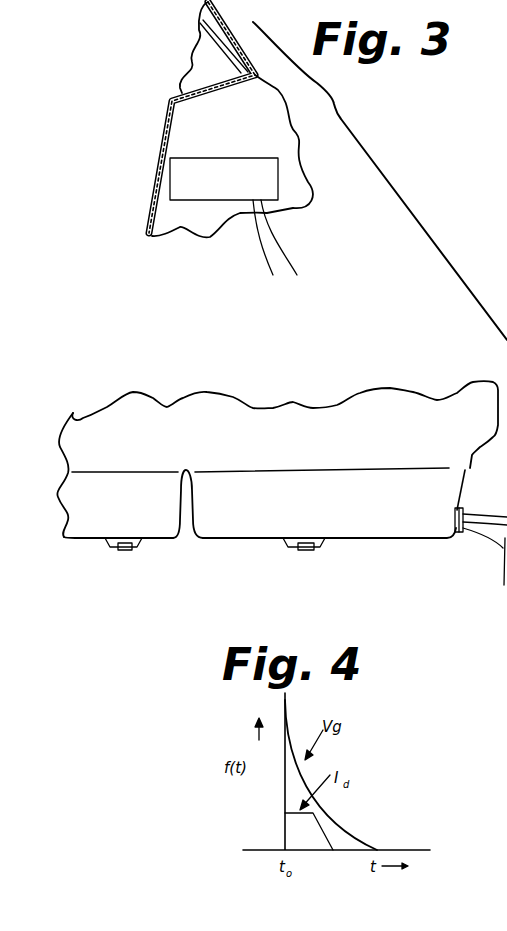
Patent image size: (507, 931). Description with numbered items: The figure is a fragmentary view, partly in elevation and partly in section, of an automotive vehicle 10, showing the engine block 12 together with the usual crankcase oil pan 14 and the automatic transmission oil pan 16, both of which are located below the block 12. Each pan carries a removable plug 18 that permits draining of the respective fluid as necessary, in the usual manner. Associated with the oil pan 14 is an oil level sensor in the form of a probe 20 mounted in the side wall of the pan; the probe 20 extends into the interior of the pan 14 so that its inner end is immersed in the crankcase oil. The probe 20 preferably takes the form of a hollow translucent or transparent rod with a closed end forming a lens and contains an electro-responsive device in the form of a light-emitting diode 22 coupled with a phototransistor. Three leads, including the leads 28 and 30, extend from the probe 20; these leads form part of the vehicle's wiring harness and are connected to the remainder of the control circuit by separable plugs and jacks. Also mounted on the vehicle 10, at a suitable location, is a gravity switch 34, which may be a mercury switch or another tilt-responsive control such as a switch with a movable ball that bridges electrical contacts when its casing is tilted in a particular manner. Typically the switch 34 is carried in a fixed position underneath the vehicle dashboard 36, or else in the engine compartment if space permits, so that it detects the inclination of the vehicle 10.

The automotive vehicle 10 is at (123, 208).
The engine block 12 is at (317, 420).
The oil pan 14 is at (257, 527).
The automatic transmission oil pan 16 is at (92, 527).
The removable plugs 18 is at (132, 549).
The probe 20 is at (463, 507).
The light-emitting diode 22 is at (498, 518).
The lead 28 is at (505, 545).
The lead 30 is at (487, 540).
The gravity switch 34 is at (270, 180).
The vehicle dashboard 36 is at (163, 137).